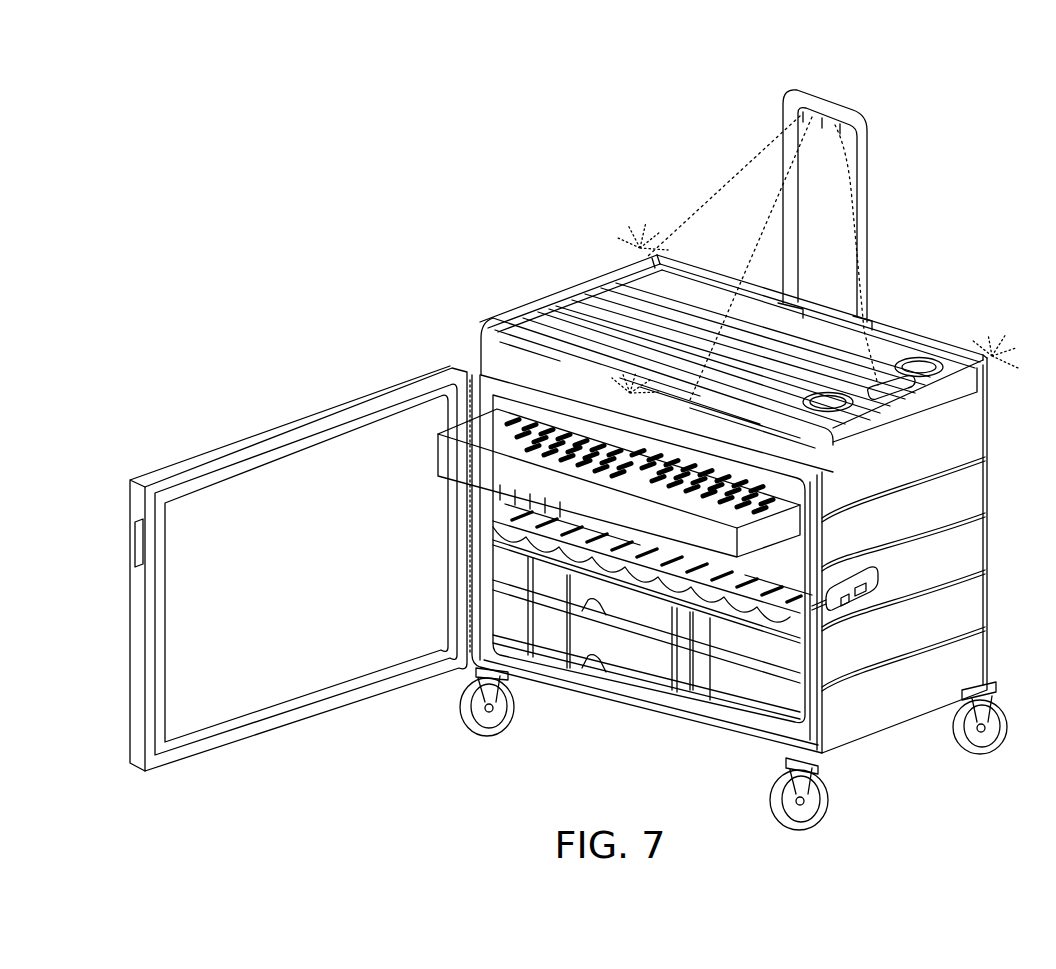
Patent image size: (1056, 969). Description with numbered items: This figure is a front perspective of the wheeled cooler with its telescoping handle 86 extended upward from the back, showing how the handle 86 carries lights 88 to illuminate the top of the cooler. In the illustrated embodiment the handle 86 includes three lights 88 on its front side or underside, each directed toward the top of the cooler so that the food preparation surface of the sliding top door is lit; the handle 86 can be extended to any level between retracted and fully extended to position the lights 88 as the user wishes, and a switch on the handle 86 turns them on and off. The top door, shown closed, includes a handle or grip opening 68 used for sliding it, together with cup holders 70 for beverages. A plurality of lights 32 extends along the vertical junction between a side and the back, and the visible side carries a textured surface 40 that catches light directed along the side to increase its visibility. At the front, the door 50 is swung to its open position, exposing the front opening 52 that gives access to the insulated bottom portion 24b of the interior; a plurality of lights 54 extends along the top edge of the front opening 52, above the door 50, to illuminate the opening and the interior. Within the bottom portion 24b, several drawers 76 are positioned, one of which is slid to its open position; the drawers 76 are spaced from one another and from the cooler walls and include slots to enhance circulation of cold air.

The handle 86 is at (832, 104).
The lights 88 is at (803, 116).
The plurality of lights 32 is at (642, 250).
The plurality of lights 54 is at (490, 366).
The cup holder 70 is at (927, 362).
The handle or grip opening 68 is at (910, 396).
The textured surface 40 is at (900, 700).
The front opening 52 is at (767, 720).
The door 50 is at (343, 400).
The drawer 76 is at (438, 452).
The bottom portion 24b is at (590, 666).